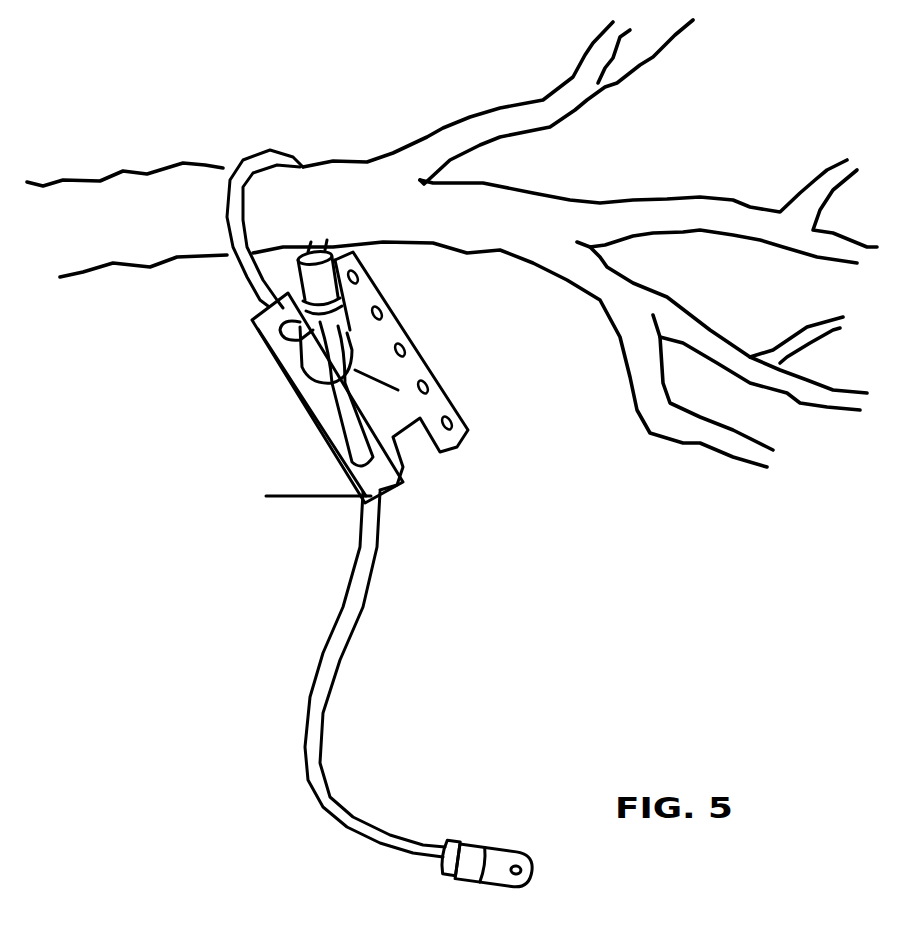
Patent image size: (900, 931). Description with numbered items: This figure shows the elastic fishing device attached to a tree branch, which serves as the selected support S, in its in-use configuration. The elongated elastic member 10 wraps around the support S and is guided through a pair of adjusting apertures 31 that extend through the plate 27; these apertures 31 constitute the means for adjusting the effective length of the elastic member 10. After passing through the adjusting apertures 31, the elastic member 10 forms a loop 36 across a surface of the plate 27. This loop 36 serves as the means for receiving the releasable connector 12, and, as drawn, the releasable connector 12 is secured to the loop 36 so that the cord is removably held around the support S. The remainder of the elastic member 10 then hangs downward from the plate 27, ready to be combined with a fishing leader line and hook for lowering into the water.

The support S is at (400, 145).
The elongated elastic member 10 is at (343, 650).
The releasable connector 12 is at (353, 330).
The plate 27 is at (320, 397).
The adjusting apertures 31 is at (280, 328).
The loop 36 is at (357, 417).